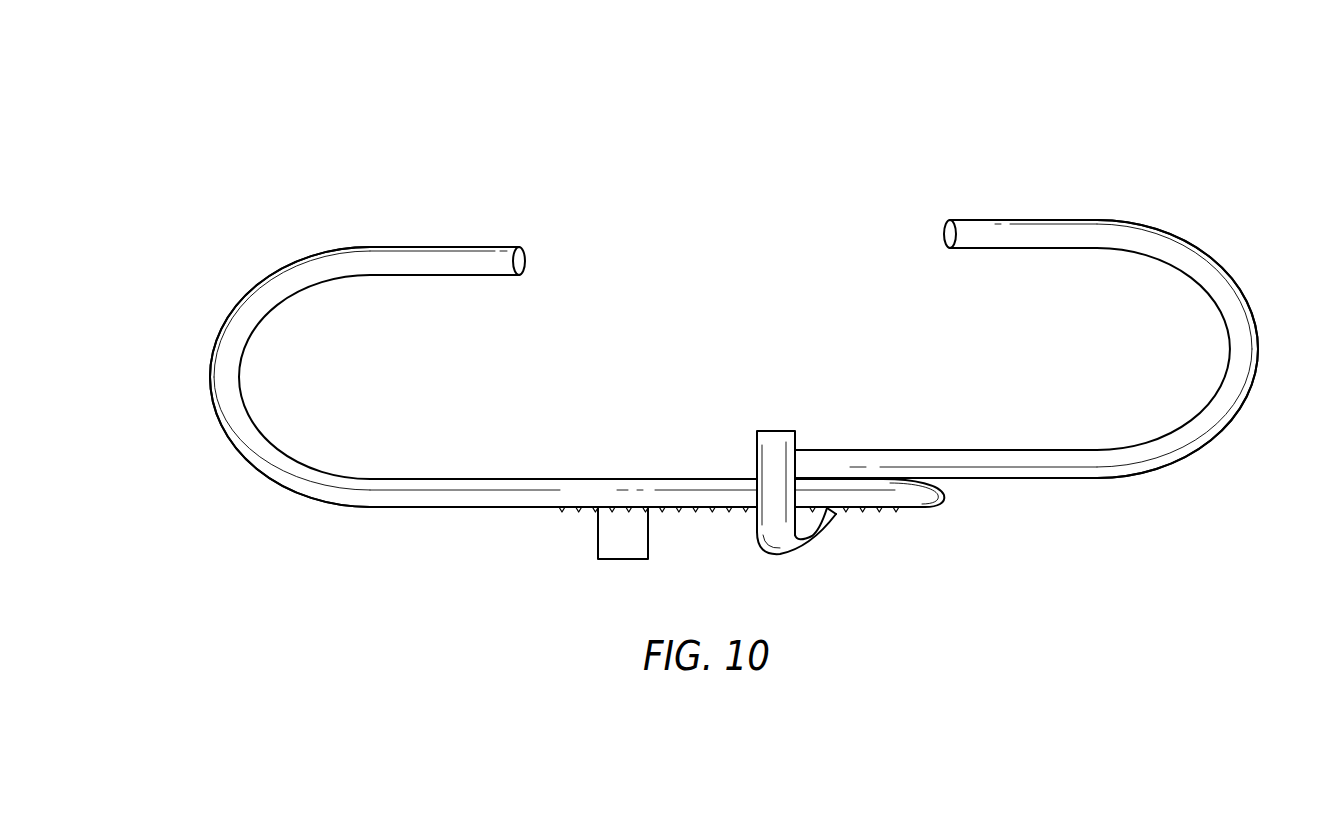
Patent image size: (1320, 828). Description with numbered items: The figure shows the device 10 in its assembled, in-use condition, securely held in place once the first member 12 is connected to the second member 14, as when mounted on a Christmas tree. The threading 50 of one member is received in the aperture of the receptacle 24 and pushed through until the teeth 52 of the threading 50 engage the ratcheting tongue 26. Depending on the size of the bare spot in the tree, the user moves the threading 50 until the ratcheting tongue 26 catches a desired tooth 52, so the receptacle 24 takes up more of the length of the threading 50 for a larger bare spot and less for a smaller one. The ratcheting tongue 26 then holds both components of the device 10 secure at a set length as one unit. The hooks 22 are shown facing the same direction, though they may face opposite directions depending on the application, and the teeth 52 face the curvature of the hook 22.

The device 10 is at (577, 113).
The first member 12 is at (1112, 162).
The second member 14 is at (236, 239).
The hook 22 is at (225, 329).
The receptacle 24 is at (780, 431).
The ratcheting tongue 26 is at (755, 533).
The threading 50 is at (533, 487).
The teeth 52 is at (613, 508).